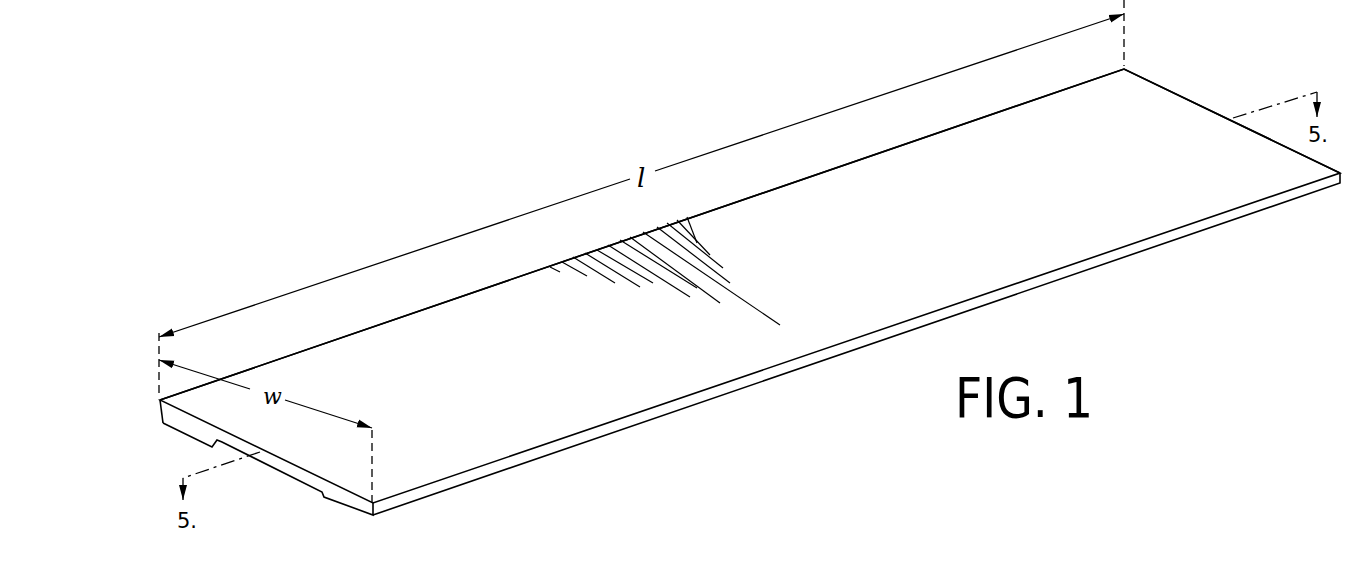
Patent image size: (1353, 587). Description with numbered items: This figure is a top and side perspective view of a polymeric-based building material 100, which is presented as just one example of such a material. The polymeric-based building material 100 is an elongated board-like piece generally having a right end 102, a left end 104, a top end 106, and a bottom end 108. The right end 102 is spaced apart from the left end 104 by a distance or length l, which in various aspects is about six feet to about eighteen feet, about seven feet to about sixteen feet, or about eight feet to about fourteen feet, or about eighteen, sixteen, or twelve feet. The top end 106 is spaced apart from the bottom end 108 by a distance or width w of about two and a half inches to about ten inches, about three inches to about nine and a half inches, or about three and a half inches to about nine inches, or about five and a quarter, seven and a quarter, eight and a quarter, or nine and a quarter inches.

The polymeric-based building material 100 is at (388, 128).
The right end 102 is at (1188, 97).
The left end 104 is at (285, 472).
The top end 106 is at (720, 390).
The bottom end 108 is at (156, 410).